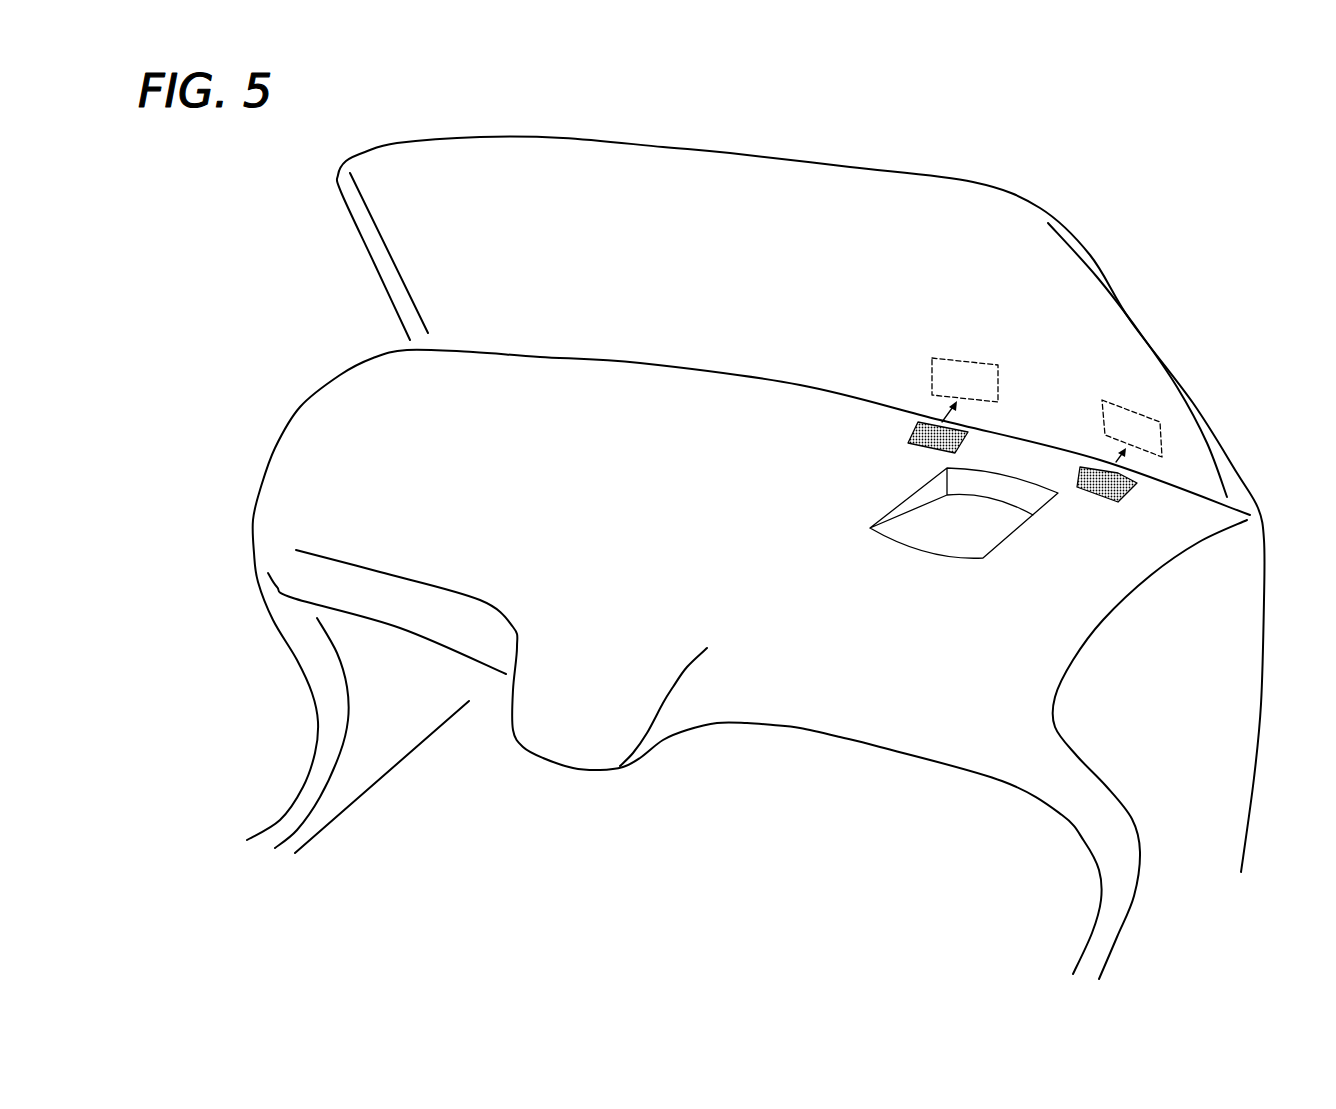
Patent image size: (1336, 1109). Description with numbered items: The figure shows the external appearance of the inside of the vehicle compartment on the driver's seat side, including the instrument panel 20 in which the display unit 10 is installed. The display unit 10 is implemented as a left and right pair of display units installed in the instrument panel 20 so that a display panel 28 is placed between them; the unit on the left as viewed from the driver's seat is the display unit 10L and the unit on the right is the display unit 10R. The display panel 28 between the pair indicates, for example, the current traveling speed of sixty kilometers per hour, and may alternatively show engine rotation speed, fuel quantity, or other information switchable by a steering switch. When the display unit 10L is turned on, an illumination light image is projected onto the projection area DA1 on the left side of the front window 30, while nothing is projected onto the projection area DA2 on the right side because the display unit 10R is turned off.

The front window 30 is at (957, 207).
The instrument panel 20 is at (662, 395).
The display unit 10 is at (980, 471).
The display unit 10L is at (917, 445).
The display unit 10R is at (1097, 493).
The projection area DA1 is at (950, 360).
The projection area DA2 is at (1120, 400).
The display panel 28 is at (978, 485).